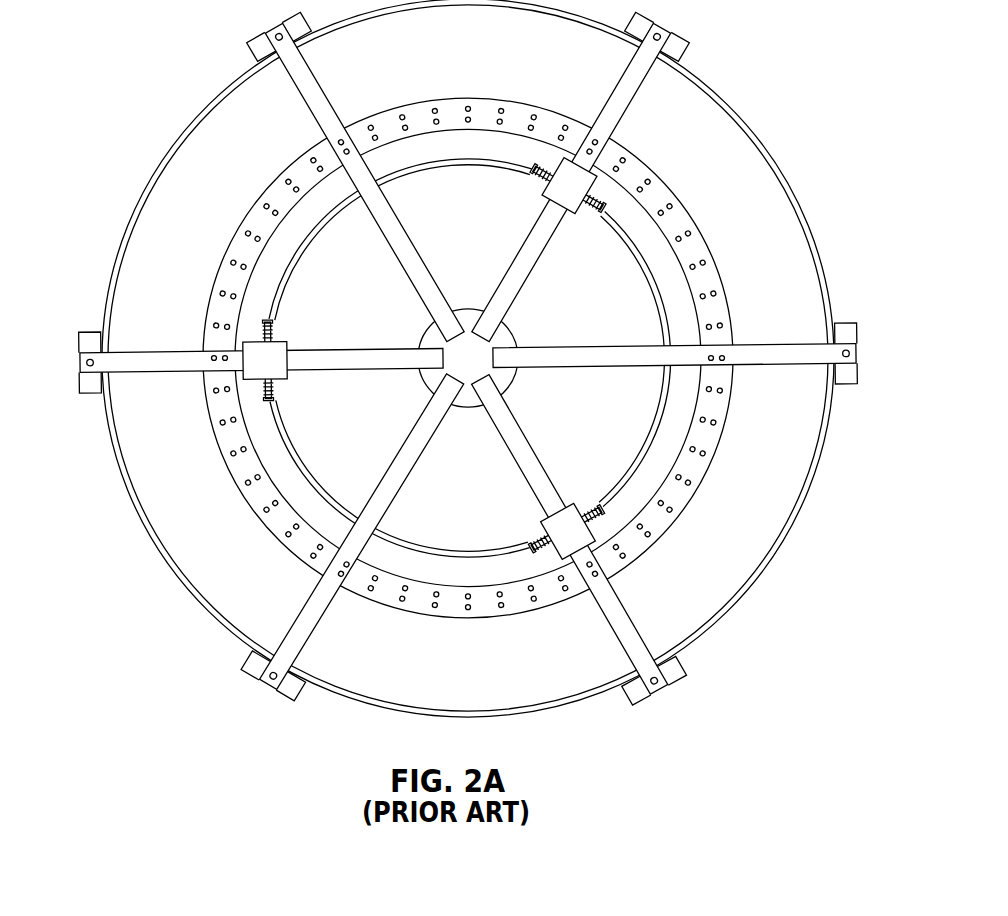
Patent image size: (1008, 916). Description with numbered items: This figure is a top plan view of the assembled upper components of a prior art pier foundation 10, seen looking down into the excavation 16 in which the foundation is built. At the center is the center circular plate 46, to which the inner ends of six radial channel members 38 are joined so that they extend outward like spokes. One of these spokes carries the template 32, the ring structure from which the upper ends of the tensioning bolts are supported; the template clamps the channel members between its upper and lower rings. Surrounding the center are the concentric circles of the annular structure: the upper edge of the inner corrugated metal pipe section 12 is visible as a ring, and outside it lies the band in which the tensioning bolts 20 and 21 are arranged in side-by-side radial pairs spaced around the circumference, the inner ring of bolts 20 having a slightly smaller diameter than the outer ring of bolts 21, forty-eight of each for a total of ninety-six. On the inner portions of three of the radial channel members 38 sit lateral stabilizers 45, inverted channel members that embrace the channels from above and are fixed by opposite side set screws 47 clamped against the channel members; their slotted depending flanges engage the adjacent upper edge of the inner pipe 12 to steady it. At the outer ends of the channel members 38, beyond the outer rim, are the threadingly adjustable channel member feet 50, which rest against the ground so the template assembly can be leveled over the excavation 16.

The pier foundation 10 is at (459, 358).
The inner corrugated metal pipe section 12 is at (424, 553).
The excavation 16 is at (776, 549).
The tensioning bolts 20 is at (432, 597).
The tensioning bolts 21 is at (462, 605).
The template 32 is at (768, 349).
The radial channel members 38 is at (508, 290).
The lateral stabilizers 45 is at (568, 210).
The center circular plate 46 is at (468, 318).
The set screws 47 is at (594, 505).
The channel member feet 50 is at (684, 41).